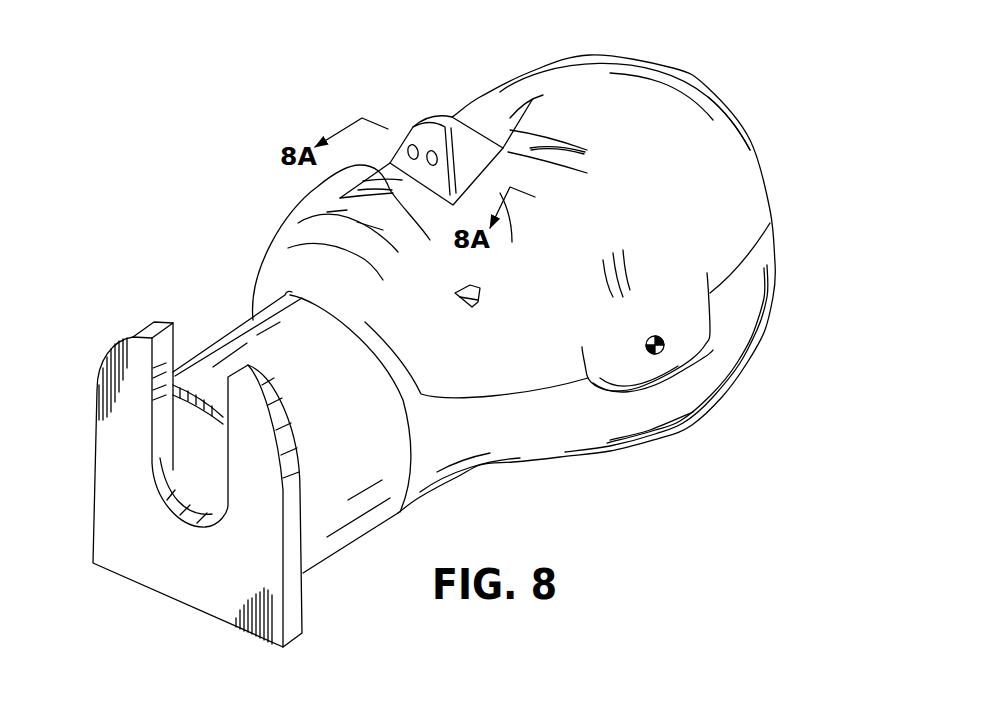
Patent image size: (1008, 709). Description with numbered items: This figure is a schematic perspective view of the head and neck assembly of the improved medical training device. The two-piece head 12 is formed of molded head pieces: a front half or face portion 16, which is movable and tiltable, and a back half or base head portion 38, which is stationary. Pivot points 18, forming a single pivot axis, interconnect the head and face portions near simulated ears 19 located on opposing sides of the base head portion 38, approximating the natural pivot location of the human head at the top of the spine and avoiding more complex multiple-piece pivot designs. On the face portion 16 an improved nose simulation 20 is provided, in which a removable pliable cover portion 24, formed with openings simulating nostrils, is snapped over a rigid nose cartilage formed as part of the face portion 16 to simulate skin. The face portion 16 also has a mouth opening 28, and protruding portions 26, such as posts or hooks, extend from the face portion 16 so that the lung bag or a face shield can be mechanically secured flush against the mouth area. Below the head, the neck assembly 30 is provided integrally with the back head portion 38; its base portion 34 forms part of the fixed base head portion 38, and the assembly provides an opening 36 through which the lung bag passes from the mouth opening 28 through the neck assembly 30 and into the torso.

The two-piece head 12 is at (696, 67).
The face portion 16 is at (707, 176).
The pivot points 18 is at (664, 347).
The simulated ears 19 is at (716, 333).
The cap 20 is at (418, 112).
The removable pliable cover portion 24 is at (477, 128).
The protruding portions 26 is at (477, 307).
The mouth opening 28 is at (350, 166).
The neck assembly 30 is at (213, 446).
The base portion 34 is at (295, 610).
The opening 36 is at (225, 403).
The base head portion 38 is at (667, 433).